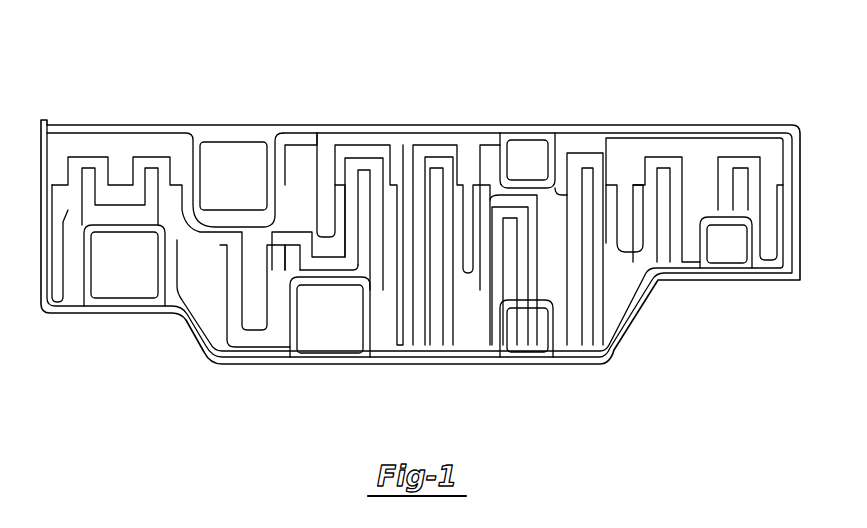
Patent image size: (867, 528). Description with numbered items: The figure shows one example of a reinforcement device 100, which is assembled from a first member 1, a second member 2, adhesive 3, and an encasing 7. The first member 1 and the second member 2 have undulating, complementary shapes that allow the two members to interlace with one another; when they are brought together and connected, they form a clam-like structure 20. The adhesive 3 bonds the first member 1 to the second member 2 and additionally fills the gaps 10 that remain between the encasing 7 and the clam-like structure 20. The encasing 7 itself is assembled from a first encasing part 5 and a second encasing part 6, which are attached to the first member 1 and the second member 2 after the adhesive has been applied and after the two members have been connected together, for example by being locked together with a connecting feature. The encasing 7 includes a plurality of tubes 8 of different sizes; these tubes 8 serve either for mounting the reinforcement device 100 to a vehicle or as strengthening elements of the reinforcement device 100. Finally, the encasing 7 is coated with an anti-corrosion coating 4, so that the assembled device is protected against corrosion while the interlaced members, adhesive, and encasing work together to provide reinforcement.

The reinforcement device 100 is at (662, 328).
The first member 1 is at (326, 158).
The second member 2 is at (219, 347).
The adhesive 3 is at (460, 337).
The anti-corrosion coating 4 is at (294, 127).
The first encasing part 5 is at (129, 127).
The second encasing part 6 is at (82, 312).
The encasing 7 is at (178, 316).
The tubes 8 is at (531, 132).
The gaps 10 is at (400, 127).
The clam-like structure 20 is at (61, 180).